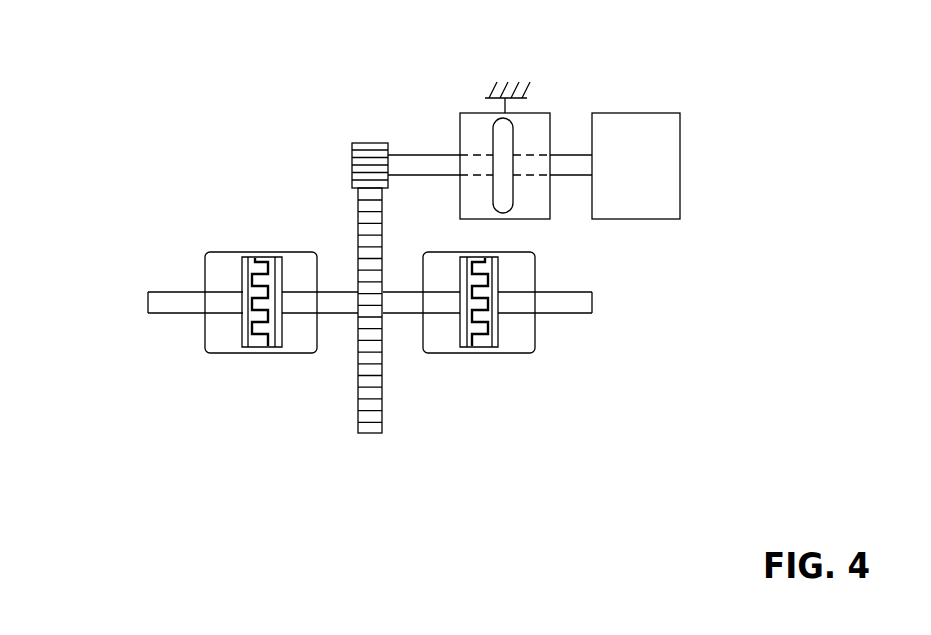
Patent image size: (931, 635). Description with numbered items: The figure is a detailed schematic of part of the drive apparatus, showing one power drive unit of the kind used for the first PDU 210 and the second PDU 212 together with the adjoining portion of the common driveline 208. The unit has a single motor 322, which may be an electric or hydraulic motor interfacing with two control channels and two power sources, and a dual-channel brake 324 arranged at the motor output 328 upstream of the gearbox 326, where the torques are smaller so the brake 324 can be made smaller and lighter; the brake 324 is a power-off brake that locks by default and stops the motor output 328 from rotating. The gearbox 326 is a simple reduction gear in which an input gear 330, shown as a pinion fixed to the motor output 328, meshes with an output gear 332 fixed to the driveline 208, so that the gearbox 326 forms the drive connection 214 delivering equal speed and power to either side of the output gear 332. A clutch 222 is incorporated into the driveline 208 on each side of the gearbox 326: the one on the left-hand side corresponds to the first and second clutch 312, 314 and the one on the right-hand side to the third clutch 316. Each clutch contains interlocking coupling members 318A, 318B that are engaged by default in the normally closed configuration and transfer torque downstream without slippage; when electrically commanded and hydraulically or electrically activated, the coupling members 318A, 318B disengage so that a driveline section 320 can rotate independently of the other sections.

The common driveline 208 is at (182, 292).
The first PDU 210 is at (751, 39).
The second PDU 212 is at (674, 60).
The drive connection 214 is at (366, 367).
The clutch 222 is at (336, 378).
The first clutch 312 is at (171, 378).
The second clutch 314 is at (255, 452).
The third clutch 316 is at (496, 462).
The coupling member 318A is at (247, 348).
The coupling member 318B is at (271, 348).
The driveline section 320 is at (402, 313).
The motor 322 is at (664, 184).
The brake 324 is at (543, 113).
The gearbox 326 is at (333, 117).
The motor output 328 is at (425, 155).
The input gear 330 is at (352, 146).
The output gear 332 is at (382, 422).